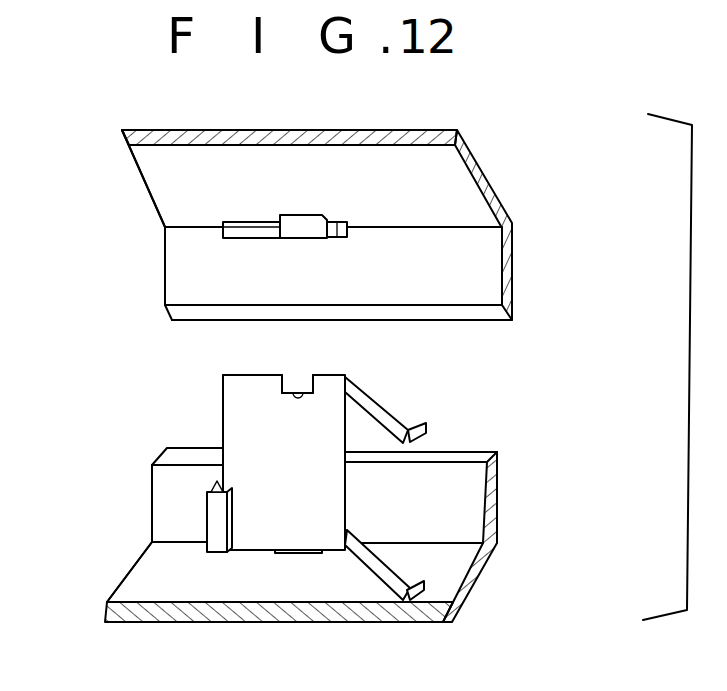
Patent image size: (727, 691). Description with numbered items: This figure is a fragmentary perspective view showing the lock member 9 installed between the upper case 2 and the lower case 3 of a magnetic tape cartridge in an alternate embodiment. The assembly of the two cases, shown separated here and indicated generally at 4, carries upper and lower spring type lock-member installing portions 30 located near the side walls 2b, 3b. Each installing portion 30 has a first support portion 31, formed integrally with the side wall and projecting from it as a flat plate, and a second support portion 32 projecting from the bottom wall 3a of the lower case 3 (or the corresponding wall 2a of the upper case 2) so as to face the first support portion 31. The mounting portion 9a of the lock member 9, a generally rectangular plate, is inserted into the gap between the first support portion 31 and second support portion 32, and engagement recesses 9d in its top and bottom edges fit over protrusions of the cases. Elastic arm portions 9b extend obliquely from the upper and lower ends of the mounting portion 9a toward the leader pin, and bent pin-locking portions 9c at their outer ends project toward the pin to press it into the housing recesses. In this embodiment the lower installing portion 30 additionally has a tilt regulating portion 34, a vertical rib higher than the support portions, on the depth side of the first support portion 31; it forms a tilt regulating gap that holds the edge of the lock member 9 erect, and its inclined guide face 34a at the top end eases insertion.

The upper case 2 is at (505, 197).
The bottom wall of upper case 2a is at (153, 182).
The side wall of upper case 2b is at (490, 267).
The lower case 3 is at (505, 506).
The bottom wall of lower case 3a is at (132, 582).
The side wall of lower case 3b is at (470, 458).
The housing assembly 4 is at (76, 312).
The lock member 9 is at (224, 370).
The mounting portion 9a is at (225, 412).
The arm portion 9b is at (377, 398).
The pin-locking portion 9c is at (425, 428).
The engagement recess 9d is at (302, 393).
The lock-member installing portion 30 is at (240, 245).
The first support portion 31 is at (352, 228).
The second support portion 32 is at (305, 228).
The tilt regulating portion 34 is at (213, 518).
The inclined guide face 34a is at (213, 485).